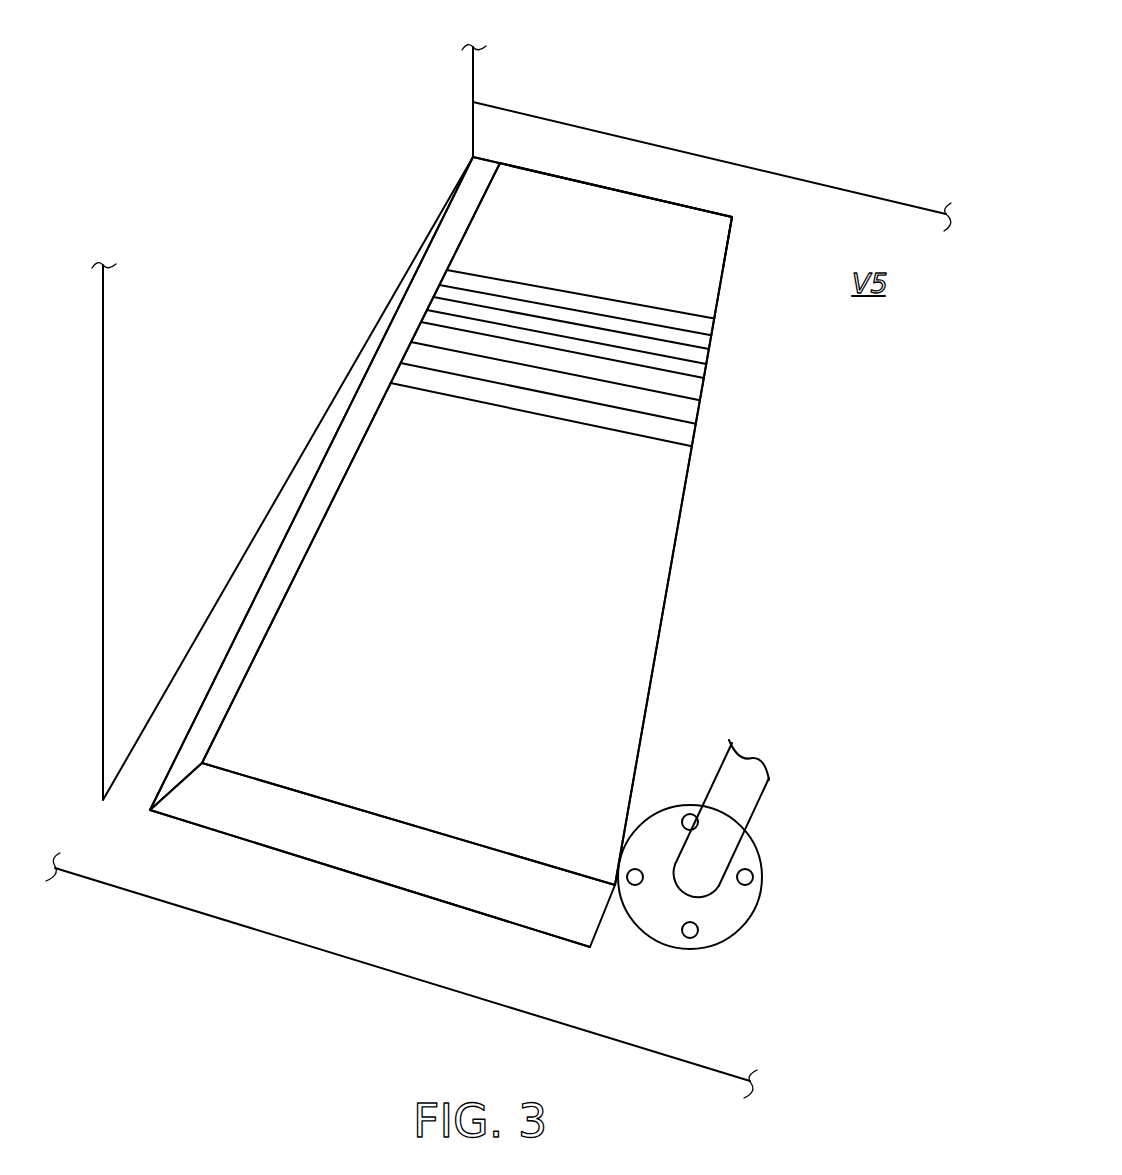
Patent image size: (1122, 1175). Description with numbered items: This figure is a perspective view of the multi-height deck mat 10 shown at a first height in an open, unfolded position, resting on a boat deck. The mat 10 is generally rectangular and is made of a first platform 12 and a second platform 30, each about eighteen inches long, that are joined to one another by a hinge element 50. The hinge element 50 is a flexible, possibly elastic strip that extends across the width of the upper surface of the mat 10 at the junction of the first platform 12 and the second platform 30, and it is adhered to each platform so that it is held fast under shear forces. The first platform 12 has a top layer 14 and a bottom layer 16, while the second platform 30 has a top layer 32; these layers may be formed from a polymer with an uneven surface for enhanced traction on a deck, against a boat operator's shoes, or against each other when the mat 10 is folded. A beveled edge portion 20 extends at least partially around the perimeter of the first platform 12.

The multi-height deck mat 10 is at (697, 101).
The first platform 12 is at (641, 637).
The top layer 14 is at (679, 558).
The bottom layer 16 is at (377, 882).
The beveled edge portion 20 is at (158, 800).
The second platform 30 is at (623, 245).
The top layer 32 is at (727, 268).
The hinge element 50 is at (527, 409).